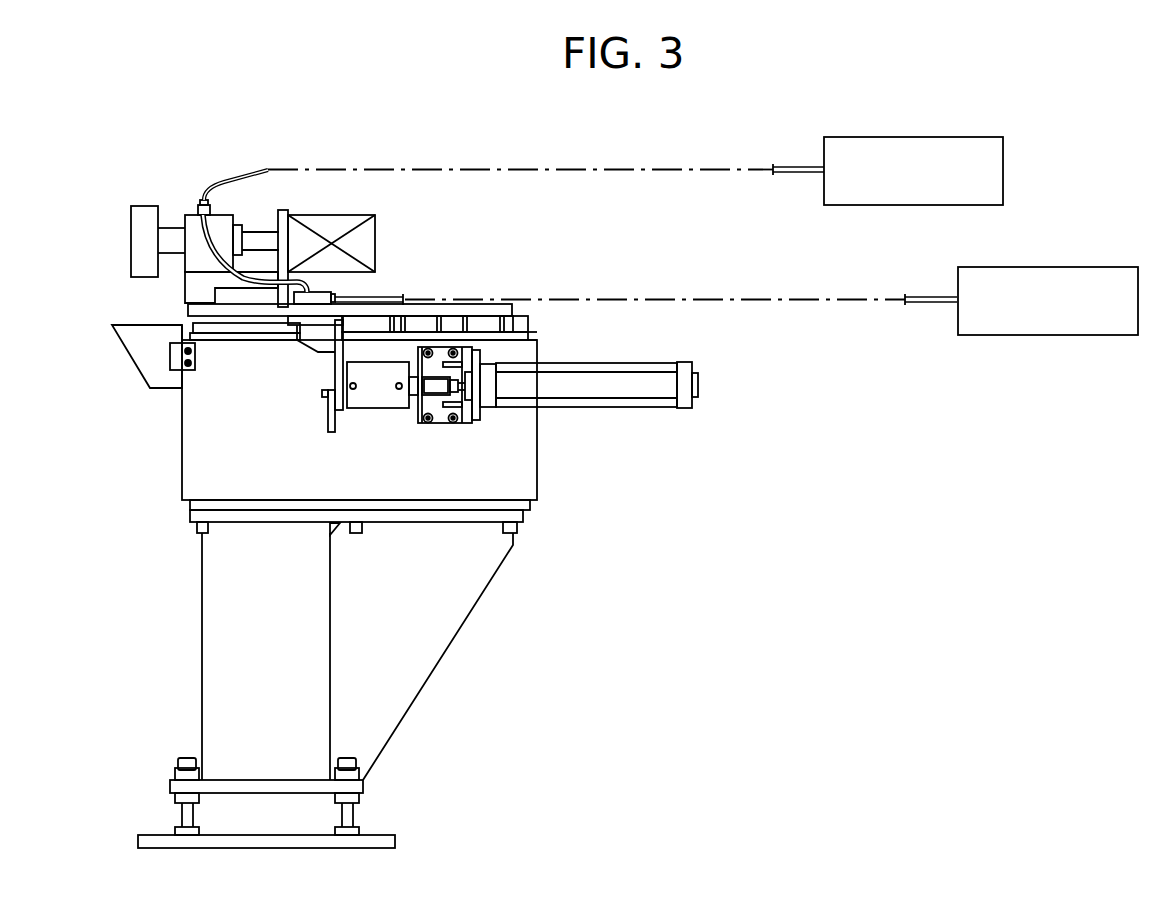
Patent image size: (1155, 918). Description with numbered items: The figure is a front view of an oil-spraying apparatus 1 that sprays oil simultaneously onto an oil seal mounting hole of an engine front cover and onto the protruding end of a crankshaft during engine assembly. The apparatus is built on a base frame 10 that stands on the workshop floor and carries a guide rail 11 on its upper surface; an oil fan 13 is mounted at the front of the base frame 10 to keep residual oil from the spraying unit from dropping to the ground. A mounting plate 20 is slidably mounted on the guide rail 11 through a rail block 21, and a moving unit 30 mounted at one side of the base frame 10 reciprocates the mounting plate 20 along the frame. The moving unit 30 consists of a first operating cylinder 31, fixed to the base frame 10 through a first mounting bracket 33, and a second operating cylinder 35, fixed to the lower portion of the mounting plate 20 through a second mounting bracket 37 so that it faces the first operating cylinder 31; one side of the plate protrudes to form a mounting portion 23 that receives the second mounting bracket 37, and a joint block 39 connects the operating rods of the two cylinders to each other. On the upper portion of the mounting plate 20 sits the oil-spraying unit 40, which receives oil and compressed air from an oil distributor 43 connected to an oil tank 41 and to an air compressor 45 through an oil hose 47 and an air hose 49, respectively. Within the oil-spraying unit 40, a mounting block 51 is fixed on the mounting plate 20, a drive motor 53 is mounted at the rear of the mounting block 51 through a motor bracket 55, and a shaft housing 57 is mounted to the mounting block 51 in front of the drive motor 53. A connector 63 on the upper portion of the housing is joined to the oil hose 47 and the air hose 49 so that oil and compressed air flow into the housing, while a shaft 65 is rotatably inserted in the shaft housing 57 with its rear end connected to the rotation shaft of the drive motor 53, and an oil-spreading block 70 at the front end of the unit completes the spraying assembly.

The oil-spraying apparatus 1 is at (808, 471).
The base frame 10 is at (190, 485).
The guide rail 11 is at (235, 330).
The oil fan 13 is at (135, 357).
The mounting plate 20 is at (193, 310).
The rail block 21 is at (452, 333).
The mounting portion 23 is at (340, 377).
The moving unit 30 is at (460, 424).
The first operating cylinder 31 is at (640, 397).
The first mounting bracket 33 is at (442, 392).
The second operating cylinder 35 is at (373, 410).
The second mounting bracket 37 is at (196, 524).
The joint block 39 is at (470, 444).
The oil-spraying unit 40 is at (366, 197).
The oil tank 41 is at (1092, 267).
The oil distributor 43 is at (316, 292).
The air compressor 45 is at (1003, 172).
The oil hose 47 is at (208, 240).
The air hose 49 is at (222, 183).
The mounting block 51 is at (213, 293).
The drive motor 53 is at (376, 234).
The motor bracket 55 is at (281, 210).
The shaft housing 57 is at (188, 220).
The connector 63 is at (200, 206).
The shaft 65 is at (163, 241).
The oil-spreading block 70 is at (98, 213).